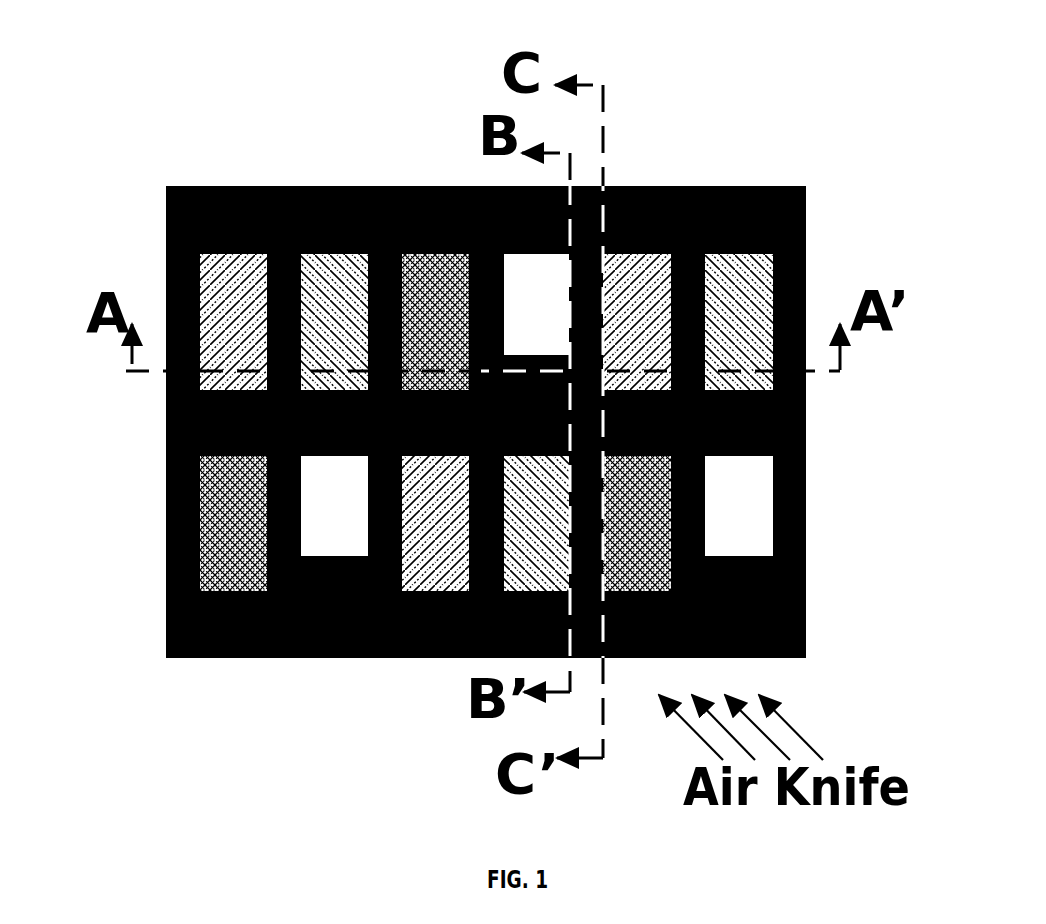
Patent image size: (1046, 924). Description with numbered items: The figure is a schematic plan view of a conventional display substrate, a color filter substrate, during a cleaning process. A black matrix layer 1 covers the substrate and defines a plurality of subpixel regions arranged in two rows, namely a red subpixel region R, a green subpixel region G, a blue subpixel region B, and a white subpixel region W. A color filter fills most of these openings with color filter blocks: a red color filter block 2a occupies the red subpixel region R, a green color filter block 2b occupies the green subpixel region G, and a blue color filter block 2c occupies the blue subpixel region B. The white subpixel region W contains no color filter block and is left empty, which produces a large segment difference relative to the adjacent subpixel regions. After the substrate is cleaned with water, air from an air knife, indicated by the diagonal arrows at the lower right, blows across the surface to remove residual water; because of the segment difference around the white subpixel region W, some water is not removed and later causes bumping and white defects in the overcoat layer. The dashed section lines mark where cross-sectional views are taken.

The black matrix layer 1 is at (486, 422).
The red color filter block 2a is at (417, 337).
The green color filter block 2b is at (518, 337).
The blue color filter block 2c is at (435, 337).
The red subpixel region R is at (233, 254).
The green subpixel region G is at (338, 254).
The blue subpixel region B is at (435, 254).
The white subpixel region W is at (535, 254).